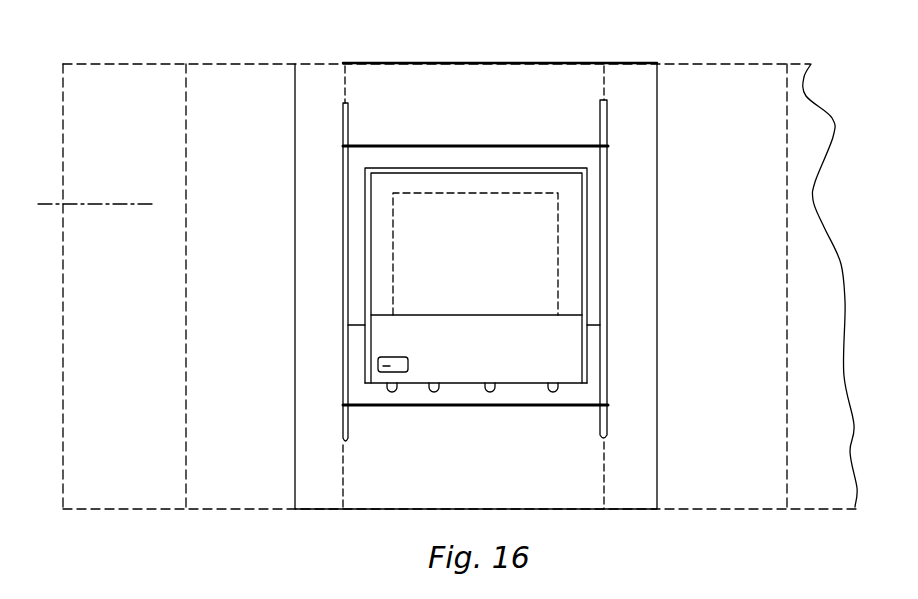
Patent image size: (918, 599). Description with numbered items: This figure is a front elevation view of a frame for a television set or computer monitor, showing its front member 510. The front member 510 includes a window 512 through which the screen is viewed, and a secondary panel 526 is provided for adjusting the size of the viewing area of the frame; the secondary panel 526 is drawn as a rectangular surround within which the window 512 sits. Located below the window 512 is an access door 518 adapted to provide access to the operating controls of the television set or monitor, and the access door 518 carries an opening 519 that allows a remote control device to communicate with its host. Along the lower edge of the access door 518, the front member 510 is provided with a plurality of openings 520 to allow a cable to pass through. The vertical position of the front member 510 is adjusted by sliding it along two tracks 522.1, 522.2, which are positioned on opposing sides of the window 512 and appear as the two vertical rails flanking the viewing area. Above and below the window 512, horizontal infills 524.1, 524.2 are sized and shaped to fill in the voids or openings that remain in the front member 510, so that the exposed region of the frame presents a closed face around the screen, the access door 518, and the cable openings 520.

The front member 510 is at (593, 287).
The window 512 is at (535, 257).
The access door 518 is at (572, 362).
The opening 519 is at (378, 369).
The openings 520 is at (561, 405).
The track 522.1 is at (343, 173).
The track 522.2 is at (608, 425).
The infill 524.1 is at (395, 117).
The infill 524.2 is at (360, 450).
The secondary panel 526 is at (378, 240).